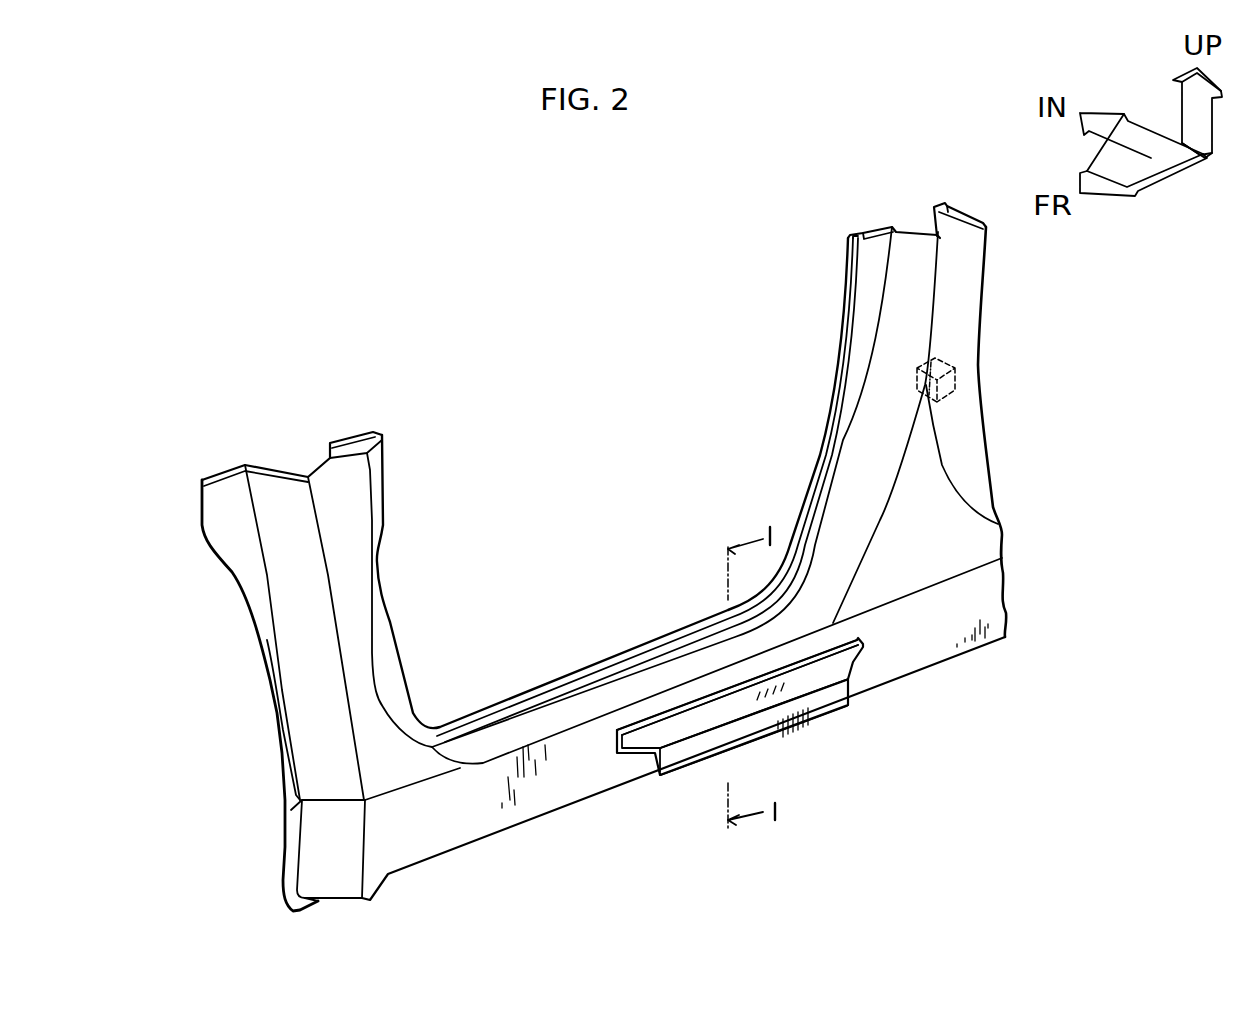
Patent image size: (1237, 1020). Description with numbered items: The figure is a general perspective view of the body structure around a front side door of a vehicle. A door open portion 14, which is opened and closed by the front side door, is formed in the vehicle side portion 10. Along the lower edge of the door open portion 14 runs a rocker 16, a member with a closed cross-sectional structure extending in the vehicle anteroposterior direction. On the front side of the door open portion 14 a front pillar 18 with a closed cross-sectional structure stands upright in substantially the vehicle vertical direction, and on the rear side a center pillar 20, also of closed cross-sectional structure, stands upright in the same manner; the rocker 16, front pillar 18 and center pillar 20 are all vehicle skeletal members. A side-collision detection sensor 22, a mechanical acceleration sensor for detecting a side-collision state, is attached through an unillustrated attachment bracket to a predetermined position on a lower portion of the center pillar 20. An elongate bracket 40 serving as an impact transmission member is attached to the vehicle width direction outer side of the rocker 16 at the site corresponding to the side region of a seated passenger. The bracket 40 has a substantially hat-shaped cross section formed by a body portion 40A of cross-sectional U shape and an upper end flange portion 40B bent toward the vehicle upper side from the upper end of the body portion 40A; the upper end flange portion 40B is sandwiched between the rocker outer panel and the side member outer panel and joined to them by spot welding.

The vehicle side portion 10 is at (1046, 370).
The door open portion 14 is at (580, 519).
The rocker 16 is at (560, 781).
The front pillar 18 is at (313, 762).
The center pillar 20 is at (965, 314).
The side-collision detection sensor 22 is at (958, 396).
The bracket 40 is at (777, 736).
The body portion 40A is at (819, 705).
The upper end flange portion 40B is at (662, 717).